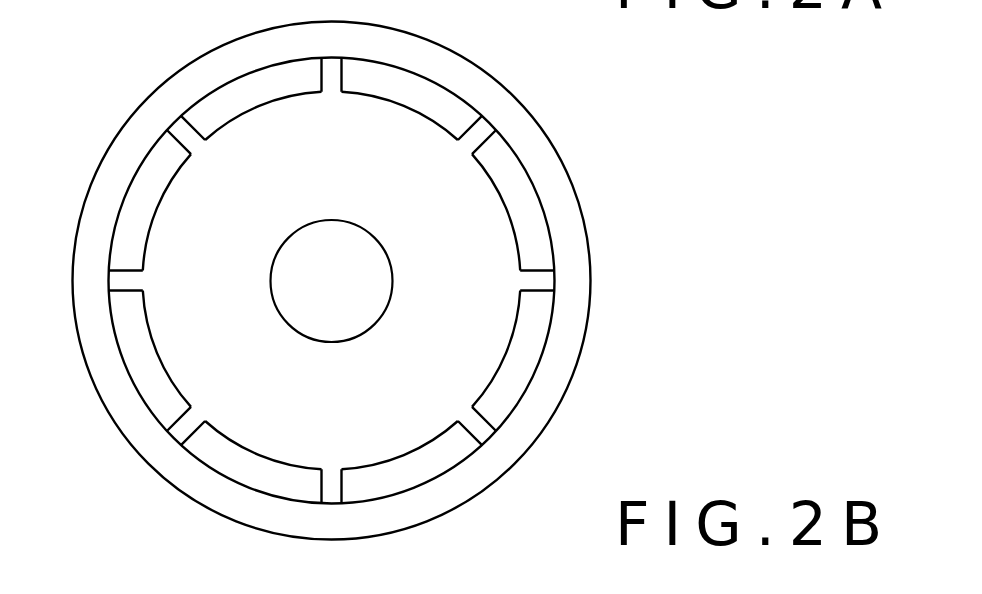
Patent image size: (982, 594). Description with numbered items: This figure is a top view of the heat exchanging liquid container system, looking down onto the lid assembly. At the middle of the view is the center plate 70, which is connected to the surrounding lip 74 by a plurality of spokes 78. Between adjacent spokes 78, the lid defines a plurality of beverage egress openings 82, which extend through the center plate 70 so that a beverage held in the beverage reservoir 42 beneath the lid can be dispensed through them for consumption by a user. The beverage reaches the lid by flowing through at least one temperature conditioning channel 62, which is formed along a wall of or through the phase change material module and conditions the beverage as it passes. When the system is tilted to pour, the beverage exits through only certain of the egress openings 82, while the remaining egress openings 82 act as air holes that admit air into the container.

The beverage reservoir 42 is at (341, 288).
The temperature conditioning channel 62 is at (237, 97).
The center plate 70 is at (337, 272).
The lip 74 is at (573, 270).
The spokes 78 is at (186, 134).
The beverage egress openings 82 is at (285, 78).